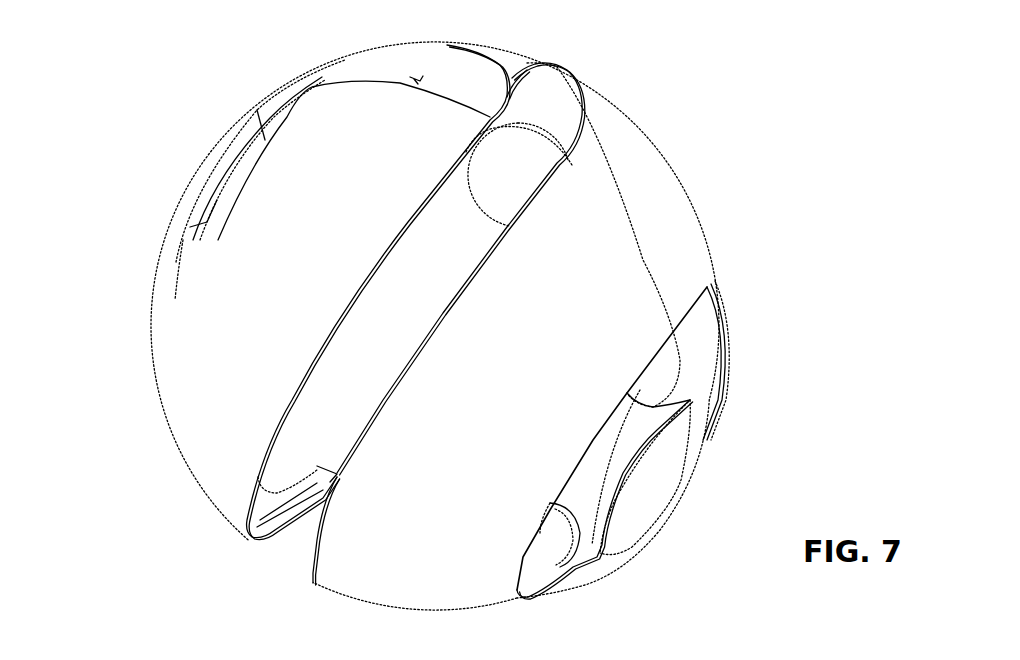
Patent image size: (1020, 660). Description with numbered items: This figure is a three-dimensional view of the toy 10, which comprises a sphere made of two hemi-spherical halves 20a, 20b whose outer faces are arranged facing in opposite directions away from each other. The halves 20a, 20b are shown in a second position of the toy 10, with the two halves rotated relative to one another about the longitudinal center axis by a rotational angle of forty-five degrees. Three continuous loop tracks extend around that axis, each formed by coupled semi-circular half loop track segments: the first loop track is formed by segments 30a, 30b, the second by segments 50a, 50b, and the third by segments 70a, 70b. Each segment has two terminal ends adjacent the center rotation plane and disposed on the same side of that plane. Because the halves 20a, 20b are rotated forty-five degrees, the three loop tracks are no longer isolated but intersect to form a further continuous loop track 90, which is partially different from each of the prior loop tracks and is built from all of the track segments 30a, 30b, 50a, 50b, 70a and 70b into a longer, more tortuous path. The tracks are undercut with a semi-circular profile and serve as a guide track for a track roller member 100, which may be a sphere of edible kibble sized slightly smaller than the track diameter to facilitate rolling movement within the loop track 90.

The toy 10 is at (133, 56).
The spherical half 20a is at (690, 140).
The spherical half 20b is at (170, 449).
The half loop track segment 30a is at (533, 92).
The half loop track segment 30b is at (215, 203).
The half loop track segment 50a is at (683, 353).
The half loop track segment 50b is at (337, 392).
The half loop track segment 70a is at (537, 540).
The half loop track segment 70b is at (607, 467).
The continuous loop track 90 is at (293, 540).
The track roller member 100 is at (185, 250).